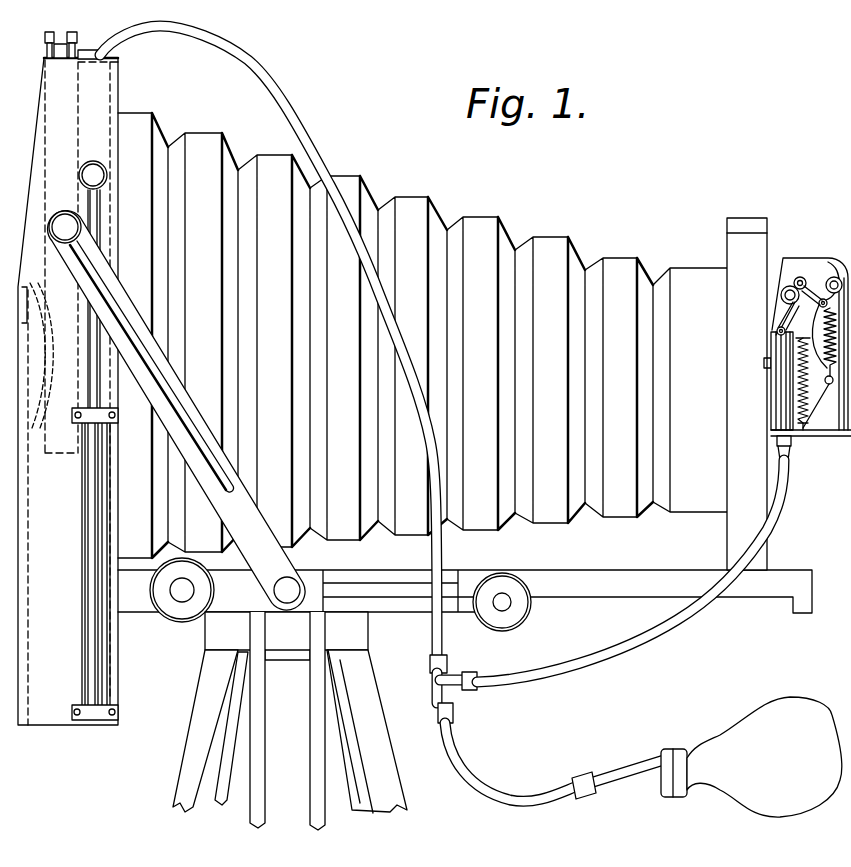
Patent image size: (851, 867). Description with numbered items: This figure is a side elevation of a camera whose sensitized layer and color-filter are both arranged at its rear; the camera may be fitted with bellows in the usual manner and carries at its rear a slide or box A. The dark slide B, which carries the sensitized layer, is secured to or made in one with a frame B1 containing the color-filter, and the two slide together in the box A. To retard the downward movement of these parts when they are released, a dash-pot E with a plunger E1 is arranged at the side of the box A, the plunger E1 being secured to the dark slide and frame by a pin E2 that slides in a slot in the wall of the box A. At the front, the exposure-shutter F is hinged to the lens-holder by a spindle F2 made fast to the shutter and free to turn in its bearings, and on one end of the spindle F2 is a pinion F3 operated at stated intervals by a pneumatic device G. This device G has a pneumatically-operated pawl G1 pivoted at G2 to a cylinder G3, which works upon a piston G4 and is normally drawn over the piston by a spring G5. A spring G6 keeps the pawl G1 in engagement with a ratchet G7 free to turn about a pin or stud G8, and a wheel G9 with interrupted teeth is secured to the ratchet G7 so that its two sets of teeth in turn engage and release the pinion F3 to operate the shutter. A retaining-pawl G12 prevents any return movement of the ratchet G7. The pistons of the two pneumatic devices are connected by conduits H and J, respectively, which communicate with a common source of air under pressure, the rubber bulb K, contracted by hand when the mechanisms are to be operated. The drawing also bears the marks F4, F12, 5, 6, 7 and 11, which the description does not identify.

The slide or box A is at (33, 707).
The dark slide B is at (47, 55).
The color-filter frame B1 is at (98, 78).
The dash-pot E is at (98, 485).
The plunger E1 is at (93, 223).
The pin E2 is at (106, 170).
The exposure-shutter F is at (837, 466).
The spindle F2 is at (747, 394).
The pinion F3 is at (838, 276).
The shutter base plate F4 is at (812, 430).
The arm F12 is at (830, 258).
The pneumatic device G is at (816, 367).
The pneumatically-operated pawl G1 is at (781, 322).
The pivot G2 is at (778, 330).
The cylinder G3 is at (783, 400).
The piston G4 is at (789, 447).
The spring G5 is at (805, 397).
The spring G6 is at (777, 323).
The ratchet G7 is at (786, 300).
The pin or stud G8 is at (802, 278).
The wheel having interrupted teeth G9 is at (801, 277).
The retaining-pawl G12 is at (813, 312).
The conduit H is at (281, 99).
The conduit J is at (684, 624).
The rubber bulb K is at (768, 722).
The lens hood part 5 is at (16, 301).
The part 6 is at (5, 265).
The part 7 is at (5, 201).
The part 11 is at (20, 400).